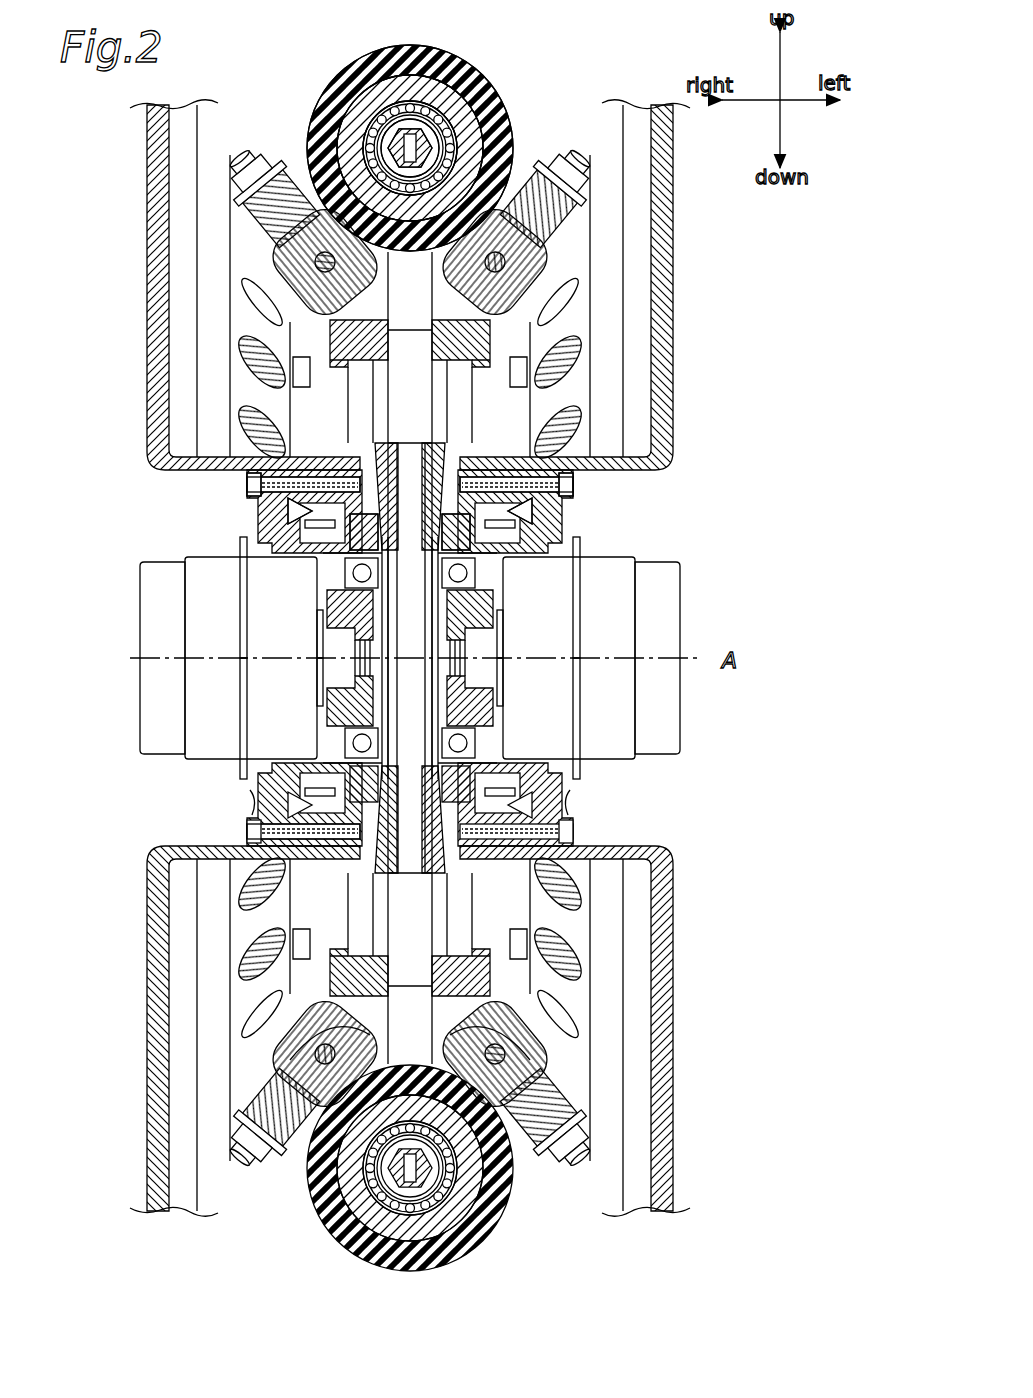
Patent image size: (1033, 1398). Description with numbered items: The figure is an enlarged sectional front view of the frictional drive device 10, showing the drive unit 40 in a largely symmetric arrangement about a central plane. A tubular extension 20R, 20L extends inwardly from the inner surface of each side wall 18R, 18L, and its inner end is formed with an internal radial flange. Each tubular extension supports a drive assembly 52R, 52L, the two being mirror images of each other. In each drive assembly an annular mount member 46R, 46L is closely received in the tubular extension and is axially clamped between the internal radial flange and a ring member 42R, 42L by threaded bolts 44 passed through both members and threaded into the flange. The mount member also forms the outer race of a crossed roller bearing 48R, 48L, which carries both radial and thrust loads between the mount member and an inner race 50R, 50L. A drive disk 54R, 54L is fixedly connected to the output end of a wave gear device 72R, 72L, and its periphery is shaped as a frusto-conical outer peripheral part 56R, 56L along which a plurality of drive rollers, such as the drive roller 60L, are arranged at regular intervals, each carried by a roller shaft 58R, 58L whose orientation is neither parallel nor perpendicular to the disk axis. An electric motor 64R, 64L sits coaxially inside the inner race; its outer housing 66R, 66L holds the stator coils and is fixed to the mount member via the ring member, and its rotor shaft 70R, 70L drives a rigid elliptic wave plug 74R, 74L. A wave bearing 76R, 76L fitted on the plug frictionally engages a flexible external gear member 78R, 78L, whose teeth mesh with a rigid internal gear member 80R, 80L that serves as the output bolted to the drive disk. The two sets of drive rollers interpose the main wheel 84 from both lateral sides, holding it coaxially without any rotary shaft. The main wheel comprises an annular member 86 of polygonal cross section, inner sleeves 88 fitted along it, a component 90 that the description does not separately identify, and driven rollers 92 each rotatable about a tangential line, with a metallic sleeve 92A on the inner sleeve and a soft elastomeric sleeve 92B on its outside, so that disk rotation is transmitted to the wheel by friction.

The vehicle drive unit 10 is at (672, 258).
The side wall 18R is at (158, 385).
The side wall 18L is at (662, 385).
The tubular extension 20R is at (172, 857).
The tubular extension 20L is at (648, 857).
The drive unit 40 is at (600, 213).
The ring member 42R is at (246, 500).
The ring member 42L is at (574, 500).
The threaded bolts 44 is at (250, 471).
The annular mount member 46R is at (292, 512).
The annular mount member 46L is at (528, 512).
The crossed roller bearing 48R is at (252, 478).
The crossed roller bearing 48L is at (568, 478).
The inner race 50R is at (352, 535).
The inner race 50L is at (468, 535).
The drive assembly 52R is at (300, 335).
The drive assembly 52L is at (525, 335).
The drive disk 54R is at (345, 340).
The drive disk 54L is at (475, 340).
The frusto-conical outer peripheral part 56R is at (238, 250).
The frusto-conical outer peripheral part 56L is at (590, 250).
The roller shaft 58R is at (300, 1060).
The roller shaft 58L is at (520, 1060).
The drive roller 60L is at (330, 1040).
The electric motor 64R is at (200, 649).
The electric motor 64L is at (620, 649).
The outer housing 66R is at (265, 690).
The outer housing 66L is at (555, 690).
The rotor shaft 70R is at (338, 605).
The rotor shaft 70L is at (482, 605).
The wave gear device 72R is at (322, 725).
The wave gear device 72L is at (498, 725).
The wave plug 74R is at (332, 745).
The wave plug 74L is at (488, 745).
The wave bearing 76R is at (262, 785).
The wave bearing 76L is at (558, 785).
The flexible external gear member 78R is at (256, 802).
The flexible external gear member 78L is at (564, 802).
The rigid internal gear member 80R is at (358, 575).
The rigid internal gear member 80L is at (462, 575).
The main wheel 84 is at (492, 72).
The annular member 86 is at (438, 148).
The inner sleeve 88 is at (412, 105).
The bearing inner race 90 is at (385, 112).
The driven roller 92 is at (438, 88).
The metallic sleeve 92A is at (462, 123).
The soft sleeve 92B is at (490, 168).